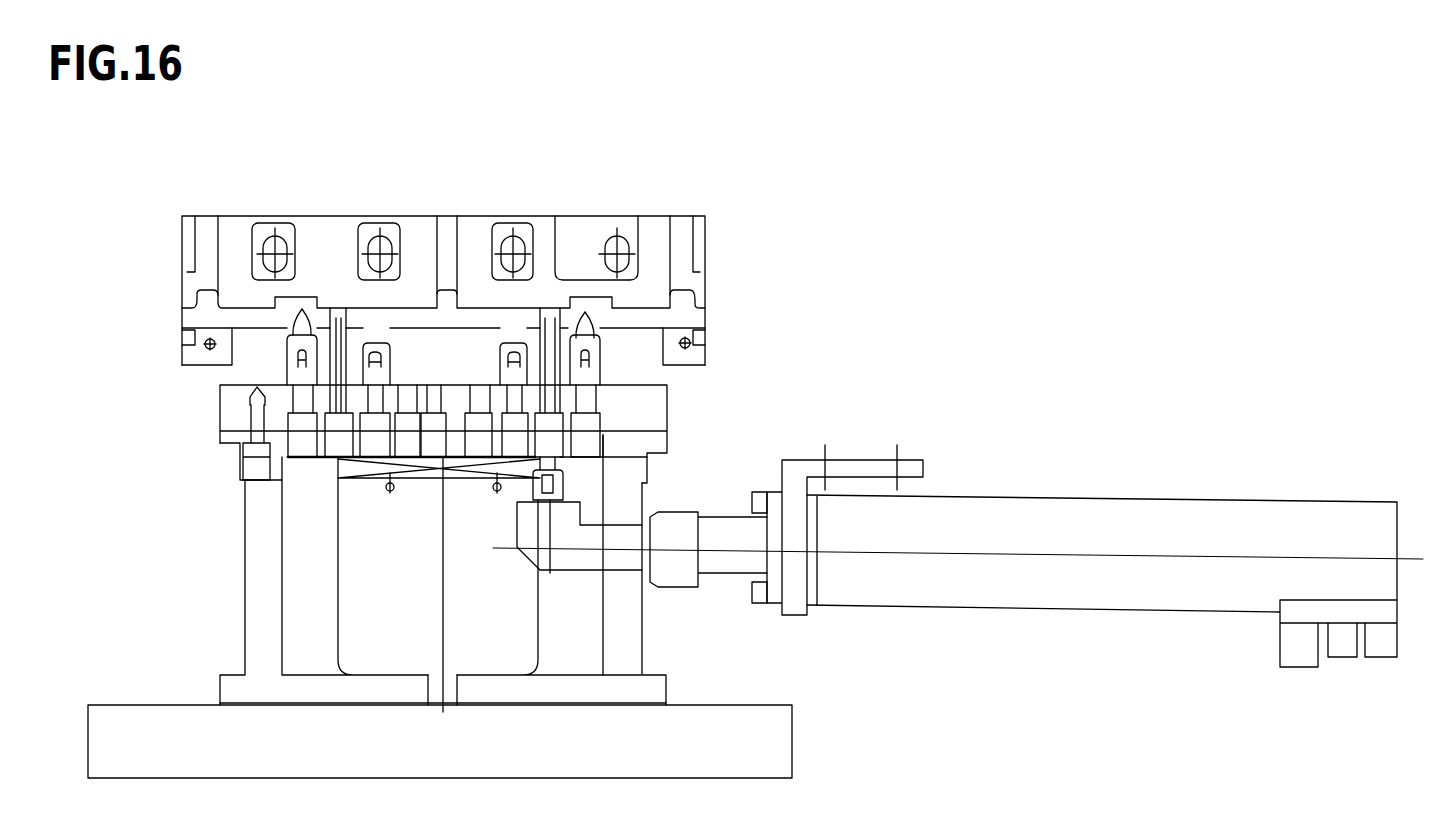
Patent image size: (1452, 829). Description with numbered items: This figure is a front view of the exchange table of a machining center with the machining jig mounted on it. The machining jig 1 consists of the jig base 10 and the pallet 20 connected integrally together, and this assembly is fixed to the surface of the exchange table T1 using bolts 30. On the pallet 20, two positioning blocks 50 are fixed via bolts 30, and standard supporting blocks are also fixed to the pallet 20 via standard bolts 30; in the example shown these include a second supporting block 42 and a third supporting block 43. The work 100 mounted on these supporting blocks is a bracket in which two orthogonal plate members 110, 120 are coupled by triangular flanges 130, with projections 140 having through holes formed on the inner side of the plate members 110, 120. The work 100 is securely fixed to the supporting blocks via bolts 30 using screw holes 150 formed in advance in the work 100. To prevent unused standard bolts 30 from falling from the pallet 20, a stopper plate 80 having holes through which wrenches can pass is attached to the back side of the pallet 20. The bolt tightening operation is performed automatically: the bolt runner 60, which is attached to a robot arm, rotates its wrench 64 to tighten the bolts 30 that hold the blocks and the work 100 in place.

The work 100 is at (486, 232).
The plate member 120 is at (653, 229).
The triangular flange 130 is at (685, 241).
The projection 140 is at (372, 233).
The plate member 110 is at (653, 318).
The screw hole 150 is at (338, 318).
The positioning block 50 is at (287, 367).
The third supporting block 43 is at (388, 346).
The second supporting block 42 is at (500, 370).
The bolt 30 is at (597, 423).
The pallet 20 is at (658, 422).
The stopper plate 80 is at (257, 485).
The wrench 64 is at (540, 470).
The jig base 10 is at (632, 650).
The machining jig 1 is at (682, 613).
The bolt runner 60 is at (1093, 512).
The exchange table T1 is at (787, 750).